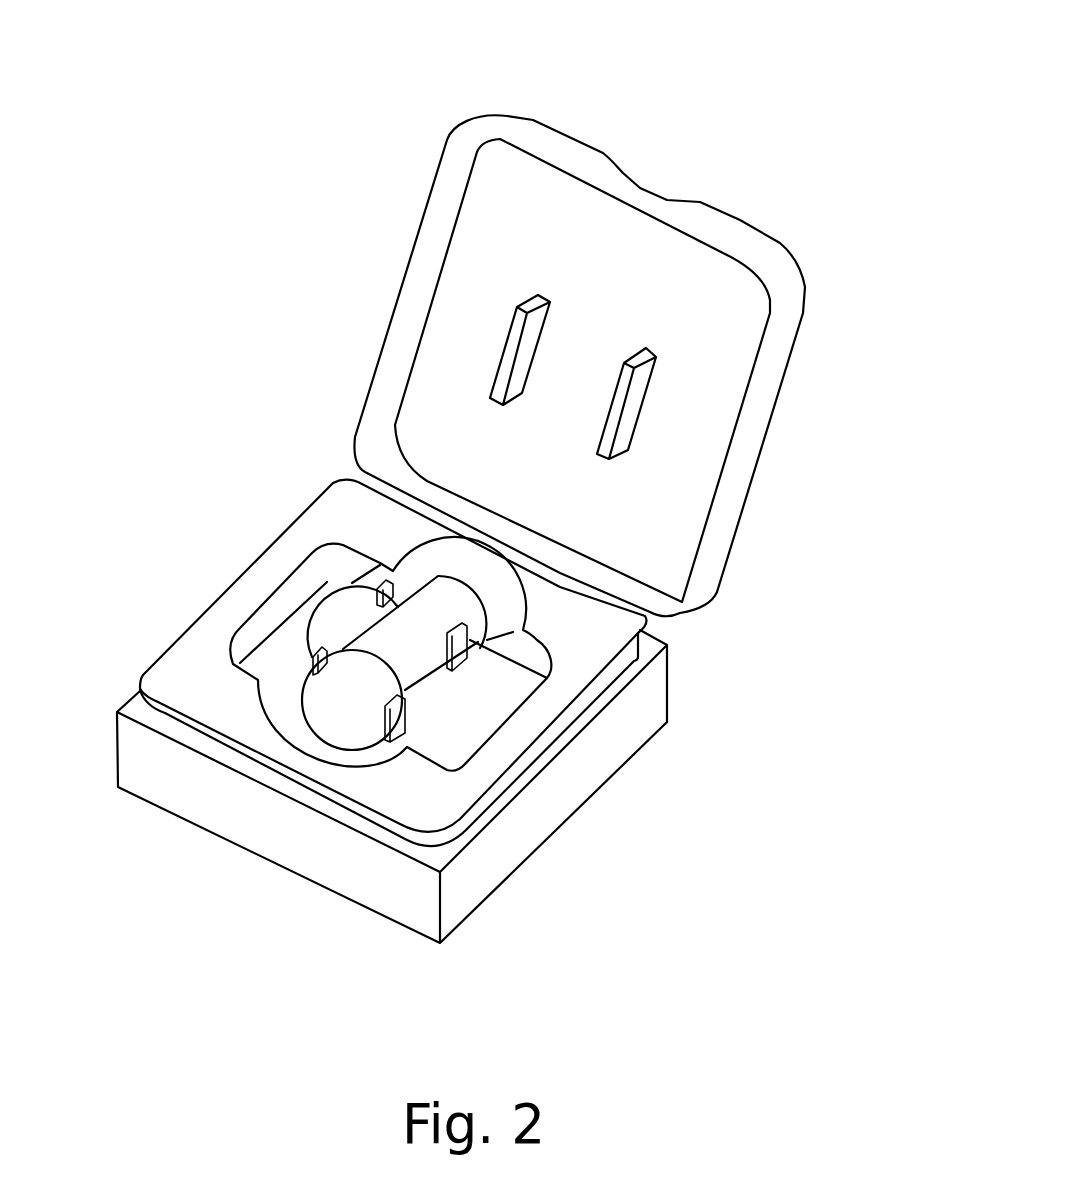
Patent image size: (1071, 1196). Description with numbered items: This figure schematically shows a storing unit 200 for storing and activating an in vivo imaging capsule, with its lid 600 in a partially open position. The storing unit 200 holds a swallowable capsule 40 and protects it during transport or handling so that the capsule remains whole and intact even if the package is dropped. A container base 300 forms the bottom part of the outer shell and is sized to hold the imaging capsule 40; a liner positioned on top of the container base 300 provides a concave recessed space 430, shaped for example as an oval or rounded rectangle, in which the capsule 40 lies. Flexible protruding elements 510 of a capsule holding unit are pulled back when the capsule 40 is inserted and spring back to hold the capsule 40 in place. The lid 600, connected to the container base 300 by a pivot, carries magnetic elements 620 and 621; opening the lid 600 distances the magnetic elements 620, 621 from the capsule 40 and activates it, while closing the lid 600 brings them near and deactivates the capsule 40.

The storing unit 200 is at (175, 107).
The container base 300 is at (617, 737).
The capsule 40 is at (347, 733).
The recessed space 430 is at (293, 742).
The protruding element 510 is at (314, 655).
The lid 600 is at (843, 225).
The magnetic element 620 is at (627, 403).
The magnetic element 621 is at (507, 353).